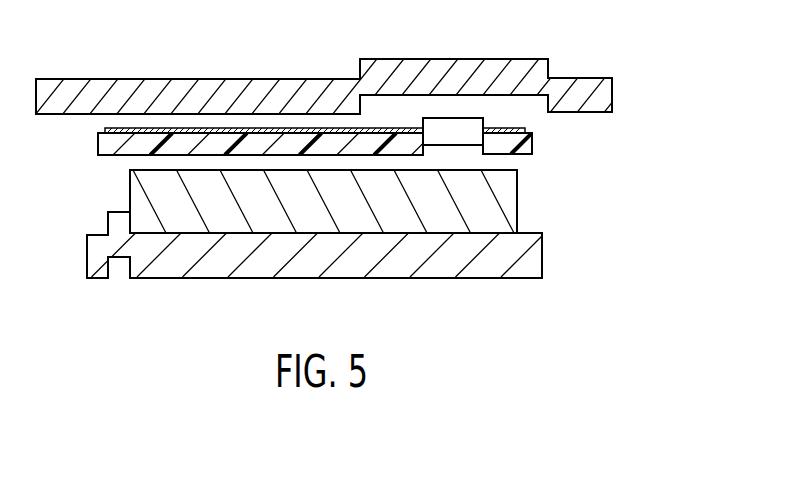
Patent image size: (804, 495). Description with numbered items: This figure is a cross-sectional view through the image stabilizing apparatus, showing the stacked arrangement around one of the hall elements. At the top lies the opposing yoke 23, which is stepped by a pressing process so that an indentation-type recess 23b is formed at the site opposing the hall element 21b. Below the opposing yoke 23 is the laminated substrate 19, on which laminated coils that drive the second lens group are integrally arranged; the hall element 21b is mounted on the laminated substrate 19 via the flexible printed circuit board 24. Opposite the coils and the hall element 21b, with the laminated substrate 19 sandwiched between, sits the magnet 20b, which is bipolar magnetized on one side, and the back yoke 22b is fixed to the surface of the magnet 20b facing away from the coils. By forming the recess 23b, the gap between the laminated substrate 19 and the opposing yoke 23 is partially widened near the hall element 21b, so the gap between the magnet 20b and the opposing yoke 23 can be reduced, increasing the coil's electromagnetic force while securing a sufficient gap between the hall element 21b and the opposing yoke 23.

The laminated substrate 19 is at (112, 147).
The flexible printed circuit board 24 is at (108, 127).
The hall element 21b is at (453, 127).
The opposing yoke 23 is at (598, 100).
The indentation-type recess 23b is at (500, 96).
The magnet 20b is at (505, 202).
The back yoke 22b is at (530, 258).